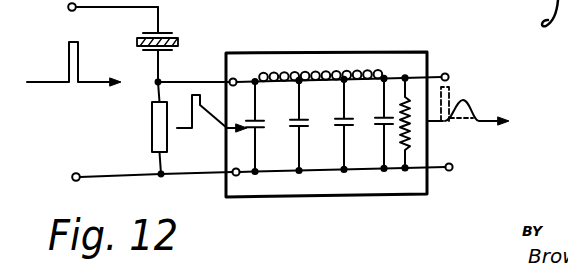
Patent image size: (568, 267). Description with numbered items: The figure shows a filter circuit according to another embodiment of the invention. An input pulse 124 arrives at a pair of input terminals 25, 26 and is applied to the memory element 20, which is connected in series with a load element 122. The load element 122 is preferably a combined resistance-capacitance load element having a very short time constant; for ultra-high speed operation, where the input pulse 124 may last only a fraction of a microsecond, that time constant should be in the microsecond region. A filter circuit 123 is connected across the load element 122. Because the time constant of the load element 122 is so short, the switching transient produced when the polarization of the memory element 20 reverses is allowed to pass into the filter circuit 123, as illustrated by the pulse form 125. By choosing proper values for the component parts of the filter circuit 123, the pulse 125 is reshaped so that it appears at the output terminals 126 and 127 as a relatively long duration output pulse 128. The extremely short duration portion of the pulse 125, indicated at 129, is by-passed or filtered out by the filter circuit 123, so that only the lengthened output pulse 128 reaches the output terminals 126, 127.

The input terminal 25 is at (69, 10).
The input pulse 124 is at (80, 52).
The memory element 20 is at (176, 33).
The extremely short duration portion of pulse 129 is at (192, 91).
The load element 122 is at (152, 140).
The input terminal 26 is at (71, 178).
The pulse form 125 is at (208, 108).
The filter circuit 123 is at (335, 124).
The output terminal 126 is at (448, 73).
The output terminal 127 is at (450, 171).
The output pulse 128 is at (474, 102).